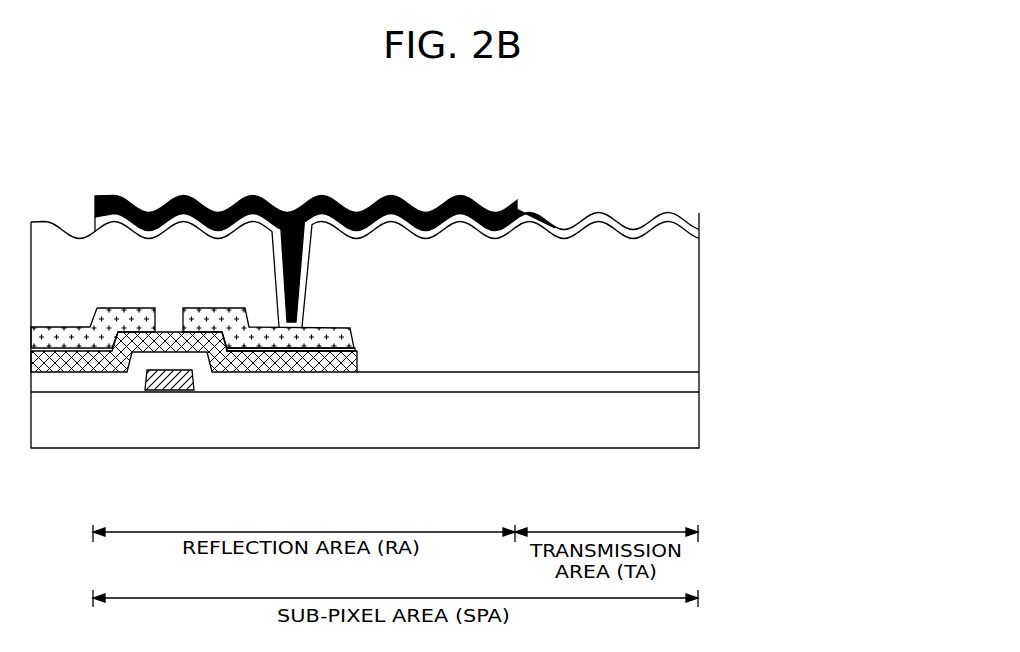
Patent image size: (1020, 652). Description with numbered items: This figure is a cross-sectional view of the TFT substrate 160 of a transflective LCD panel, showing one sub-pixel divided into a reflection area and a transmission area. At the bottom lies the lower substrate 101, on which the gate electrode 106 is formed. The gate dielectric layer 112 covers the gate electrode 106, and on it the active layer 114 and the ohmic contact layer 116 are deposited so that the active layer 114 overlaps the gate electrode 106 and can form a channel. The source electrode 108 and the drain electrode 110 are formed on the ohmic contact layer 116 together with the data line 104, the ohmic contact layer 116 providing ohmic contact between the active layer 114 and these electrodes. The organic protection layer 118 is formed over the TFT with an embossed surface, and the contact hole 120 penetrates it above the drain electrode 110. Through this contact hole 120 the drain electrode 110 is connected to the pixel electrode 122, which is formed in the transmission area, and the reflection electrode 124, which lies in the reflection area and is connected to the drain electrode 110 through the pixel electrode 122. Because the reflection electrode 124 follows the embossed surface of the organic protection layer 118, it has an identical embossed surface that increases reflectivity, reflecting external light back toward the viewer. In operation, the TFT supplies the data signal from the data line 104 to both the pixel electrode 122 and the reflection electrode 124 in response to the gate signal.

The lower substrate 101 is at (699, 423).
The data line 104 is at (59, 340).
The gate electrode 106 is at (173, 387).
The source electrode 108 is at (135, 318).
The drain electrode 110 is at (333, 343).
The gate dielectric layer 112 is at (699, 383).
The active layer 114 is at (237, 367).
The ohmic contact layer 116 is at (289, 350).
The organic protection layer 118 is at (699, 304).
The contact hole 120 is at (291, 212).
The pixel electrode 122 is at (699, 235).
The reflection electrode 124 is at (462, 198).
The TFT substrate 160 is at (789, 338).